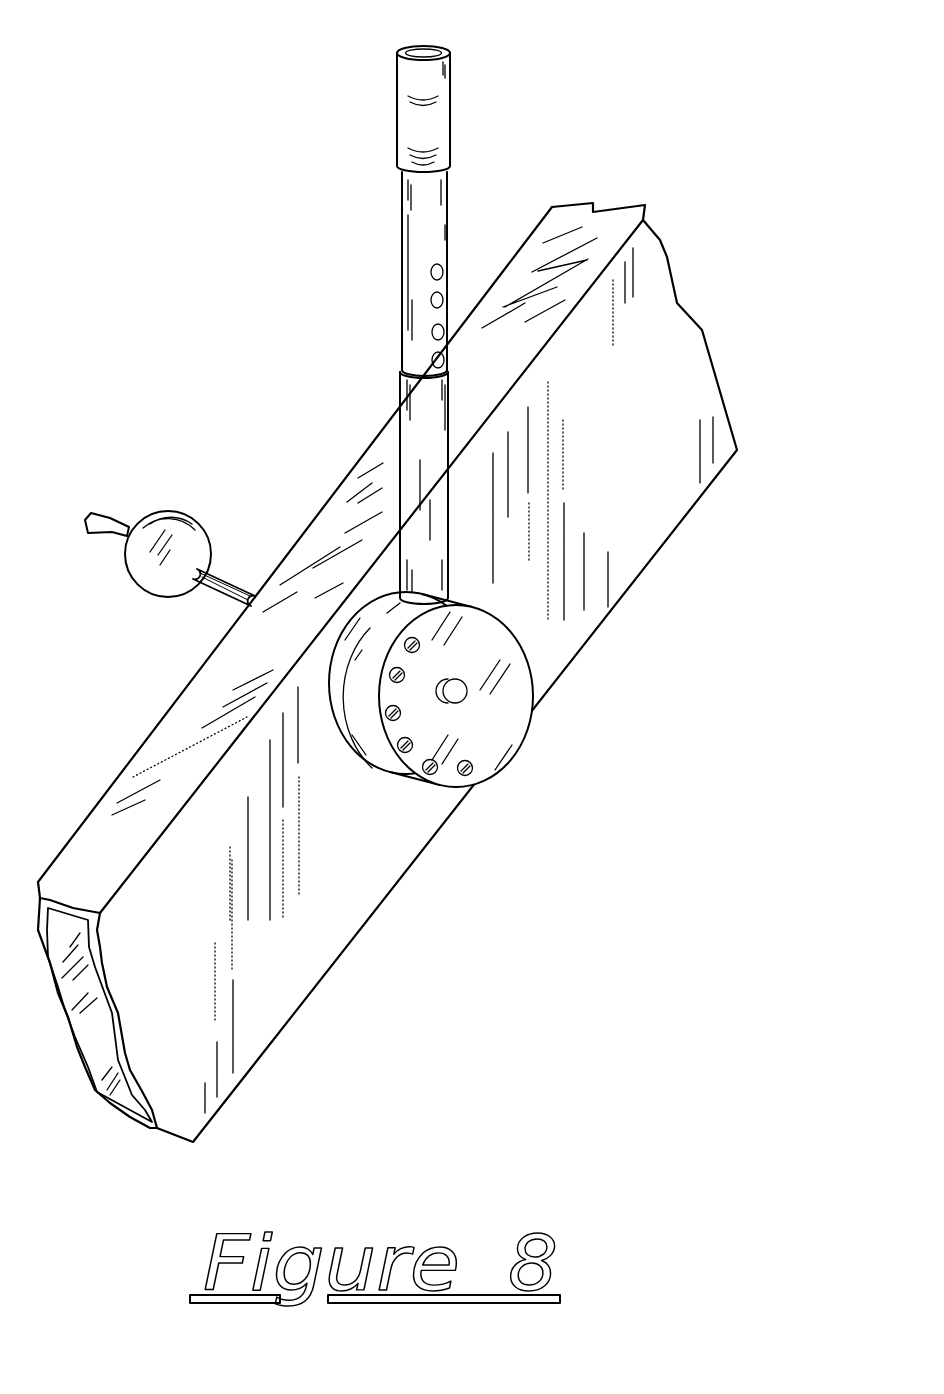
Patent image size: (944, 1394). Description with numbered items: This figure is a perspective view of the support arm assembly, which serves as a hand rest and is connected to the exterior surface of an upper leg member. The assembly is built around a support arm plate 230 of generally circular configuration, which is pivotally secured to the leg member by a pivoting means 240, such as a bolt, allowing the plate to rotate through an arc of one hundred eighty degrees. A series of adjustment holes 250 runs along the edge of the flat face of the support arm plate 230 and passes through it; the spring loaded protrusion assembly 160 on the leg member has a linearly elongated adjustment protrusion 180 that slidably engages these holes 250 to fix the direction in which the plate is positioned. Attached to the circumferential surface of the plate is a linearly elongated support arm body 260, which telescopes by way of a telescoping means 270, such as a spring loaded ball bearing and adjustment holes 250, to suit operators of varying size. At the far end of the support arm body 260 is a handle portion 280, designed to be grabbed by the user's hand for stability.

The spring loaded protrusion assembly 160 is at (190, 512).
The adjustment protrusion 180 is at (217, 597).
The support arm plate 230 is at (458, 790).
The pivoting means 240 is at (467, 697).
The adjustment holes 250 is at (432, 300).
The support arm body 260 is at (400, 455).
The telescoping means 270 is at (402, 367).
The handle portion 280 is at (452, 123).